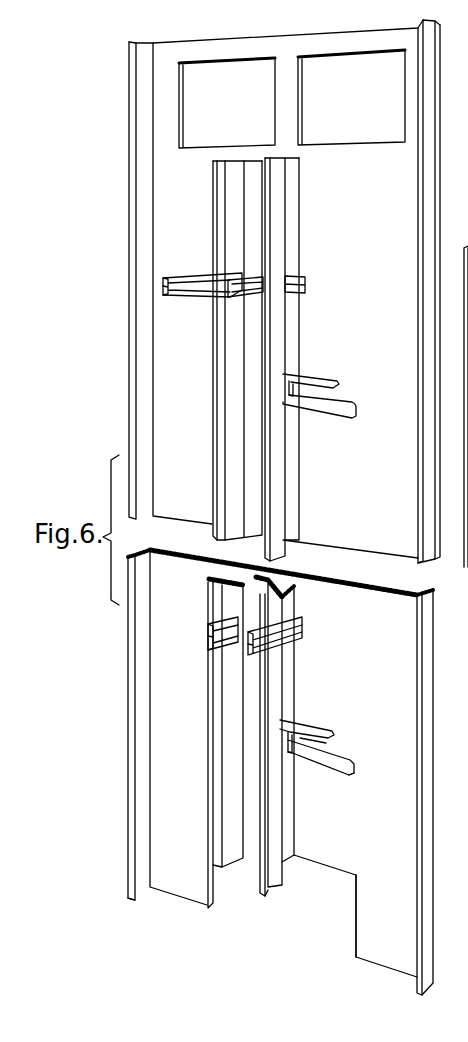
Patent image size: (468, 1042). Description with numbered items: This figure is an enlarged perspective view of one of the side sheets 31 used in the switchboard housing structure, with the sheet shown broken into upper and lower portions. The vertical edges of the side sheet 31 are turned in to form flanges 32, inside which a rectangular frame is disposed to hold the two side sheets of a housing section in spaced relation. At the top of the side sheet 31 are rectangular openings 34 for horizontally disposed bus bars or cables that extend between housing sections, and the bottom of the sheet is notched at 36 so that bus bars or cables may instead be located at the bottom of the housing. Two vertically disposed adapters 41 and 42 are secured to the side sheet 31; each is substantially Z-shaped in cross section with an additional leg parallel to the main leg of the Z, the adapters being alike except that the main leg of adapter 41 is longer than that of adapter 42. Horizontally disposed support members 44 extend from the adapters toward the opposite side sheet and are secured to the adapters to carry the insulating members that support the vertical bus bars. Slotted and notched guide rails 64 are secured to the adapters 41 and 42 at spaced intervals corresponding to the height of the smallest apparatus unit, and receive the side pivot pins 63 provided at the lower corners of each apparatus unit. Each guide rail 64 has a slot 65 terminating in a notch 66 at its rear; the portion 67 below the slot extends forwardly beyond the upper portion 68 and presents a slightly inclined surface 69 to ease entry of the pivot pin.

The side sheet 31 is at (300, 33).
The flange 32 is at (127, 763).
The rectangular opening 34 is at (223, 77).
The notch 36 is at (355, 912).
The adapter 41 is at (289, 692).
The adapter 42 is at (208, 606).
The support member 44 is at (192, 277).
The side pivot pin 63 is at (462, 554).
The guide rail 64 is at (314, 437).
The slot 65 is at (328, 743).
The notch 66 is at (292, 750).
The lower portion of guide rail 67 is at (346, 777).
The upper portion of guide rail 68 is at (306, 726).
The inclined surface 69 is at (351, 759).